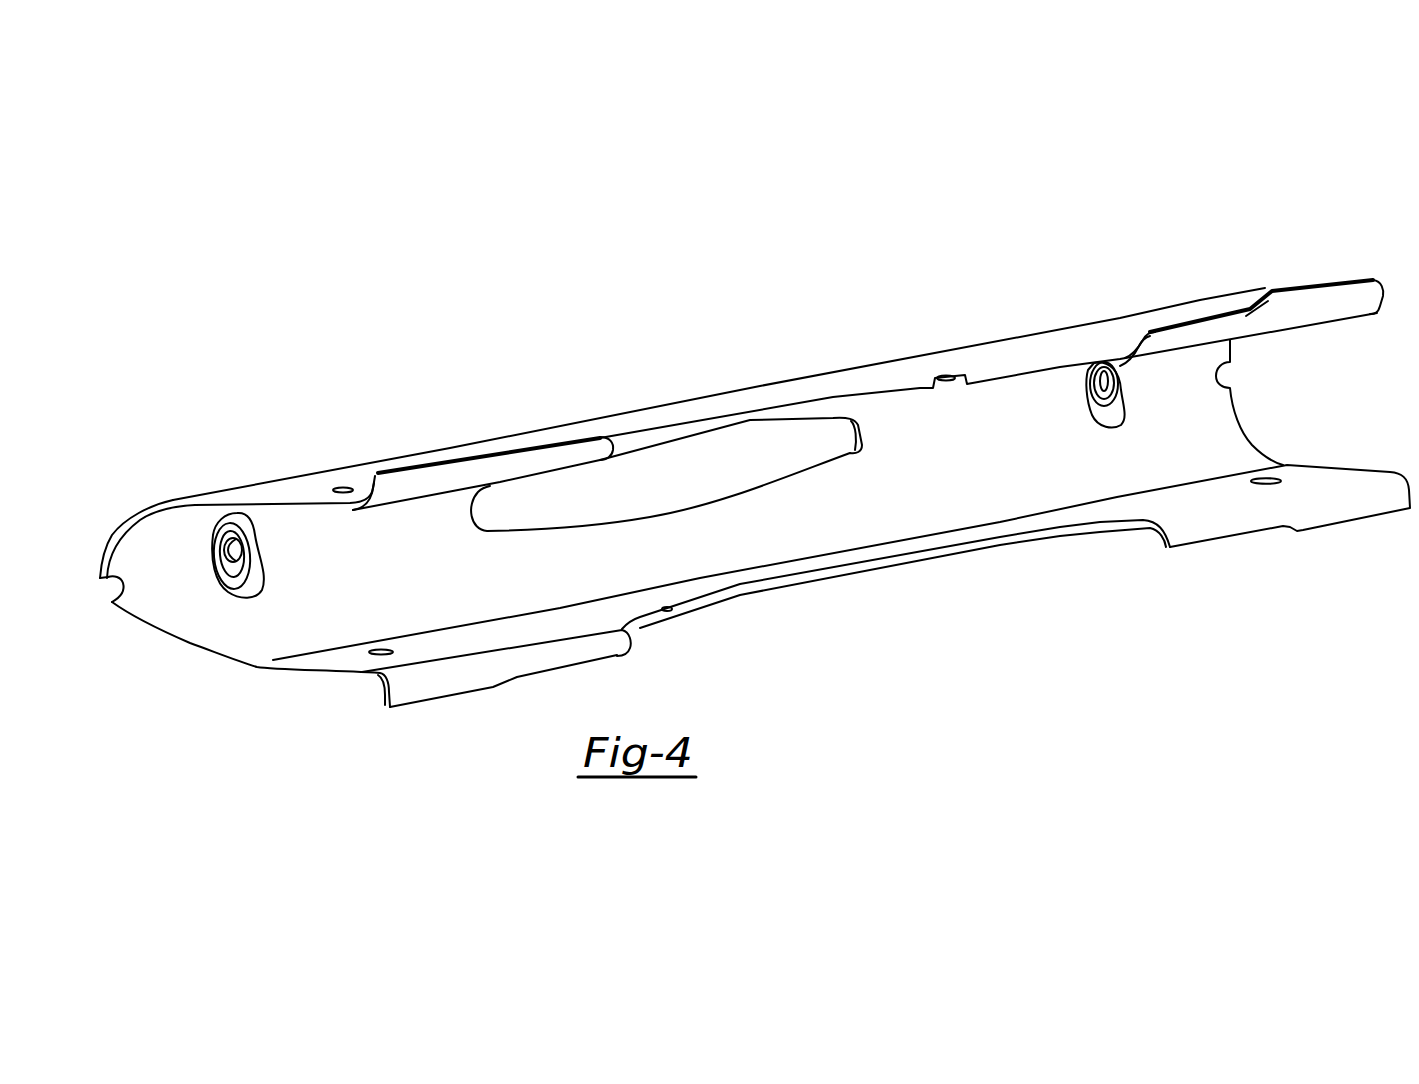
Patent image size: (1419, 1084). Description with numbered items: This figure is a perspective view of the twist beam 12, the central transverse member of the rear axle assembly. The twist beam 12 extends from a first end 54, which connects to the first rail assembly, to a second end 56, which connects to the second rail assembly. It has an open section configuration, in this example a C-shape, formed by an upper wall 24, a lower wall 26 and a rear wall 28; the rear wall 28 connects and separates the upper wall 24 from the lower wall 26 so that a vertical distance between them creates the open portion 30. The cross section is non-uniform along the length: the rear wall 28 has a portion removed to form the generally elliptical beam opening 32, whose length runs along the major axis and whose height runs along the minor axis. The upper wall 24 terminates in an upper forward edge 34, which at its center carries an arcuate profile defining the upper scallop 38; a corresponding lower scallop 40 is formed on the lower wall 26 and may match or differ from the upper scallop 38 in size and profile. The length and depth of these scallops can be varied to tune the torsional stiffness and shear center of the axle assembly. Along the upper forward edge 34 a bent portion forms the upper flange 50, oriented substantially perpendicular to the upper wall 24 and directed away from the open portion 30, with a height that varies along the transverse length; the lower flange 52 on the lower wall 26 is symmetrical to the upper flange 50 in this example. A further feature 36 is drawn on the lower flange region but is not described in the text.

The twist beam 12 is at (990, 238).
The upper wall 24 is at (1052, 348).
The lower wall 26 is at (1070, 520).
The rear wall 28 is at (1210, 427).
The open portion 30 is at (1328, 350).
The beam opening 32 is at (832, 417).
The upper forward edge 34 is at (627, 448).
The step 36 is at (667, 610).
The upper scallop 38 is at (927, 373).
The lower scallop 40 is at (852, 564).
The upper flange 50 is at (434, 478).
The lower flange 52 is at (445, 682).
The first end 54 is at (123, 513).
The second end 56 is at (1263, 289).